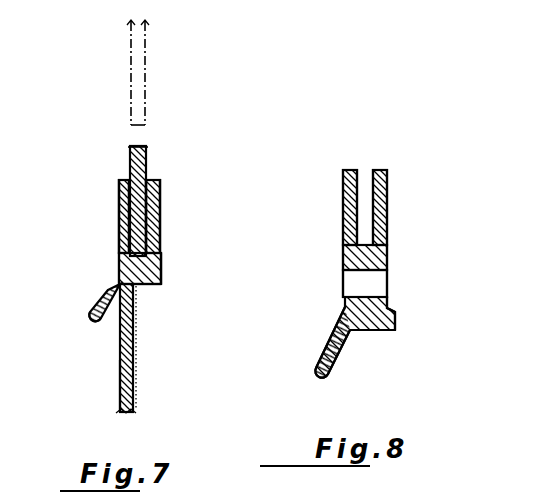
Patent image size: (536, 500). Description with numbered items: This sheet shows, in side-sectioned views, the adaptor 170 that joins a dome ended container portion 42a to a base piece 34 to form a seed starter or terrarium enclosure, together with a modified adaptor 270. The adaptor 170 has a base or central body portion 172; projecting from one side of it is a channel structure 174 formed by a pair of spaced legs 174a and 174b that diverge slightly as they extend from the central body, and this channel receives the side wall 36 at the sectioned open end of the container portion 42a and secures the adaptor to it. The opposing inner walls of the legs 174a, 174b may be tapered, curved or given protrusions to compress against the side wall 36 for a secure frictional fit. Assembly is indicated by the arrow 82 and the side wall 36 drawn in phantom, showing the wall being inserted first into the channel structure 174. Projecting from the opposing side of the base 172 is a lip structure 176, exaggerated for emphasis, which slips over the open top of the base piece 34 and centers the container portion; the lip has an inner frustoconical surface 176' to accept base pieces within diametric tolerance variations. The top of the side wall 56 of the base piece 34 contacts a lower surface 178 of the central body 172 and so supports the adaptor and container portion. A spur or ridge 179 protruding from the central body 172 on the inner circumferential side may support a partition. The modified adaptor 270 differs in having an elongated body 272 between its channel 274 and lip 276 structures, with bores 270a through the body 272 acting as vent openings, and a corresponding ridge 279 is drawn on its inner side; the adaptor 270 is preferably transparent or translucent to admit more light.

In FIG. 7, the side wall 36 is at (147, 58).
In FIG. 7, the arrow 82 is at (132, 95).
In FIG. 7, the container portion 42a is at (122, 151).
In FIG. 7, the leg 174a is at (120, 182).
In FIG. 7, the leg 174b is at (160, 182).
In FIG. 7, the channel structure 174 is at (115, 183).
In FIG. 7, the adaptor 170 is at (166, 230).
In FIG. 7, the spur or ridge 179 is at (161, 264).
In FIG. 7, the central body portion 172 is at (117, 267).
In FIG. 7, the lower surface 178 is at (147, 285).
In FIG. 7, the base piece 34 is at (141, 379).
In FIG. 7, the side wall 56 is at (123, 378).
In FIG. 7, the lip structure 176 is at (70, 304).
In FIG. 7, the inner frustoconical surface 176' is at (74, 338).
In FIG. 8, the channel structure 274 is at (392, 171).
In FIG. 8, the modified adaptor 270 is at (336, 267).
In FIG. 8, the elongated body 272 is at (387, 257).
In FIG. 8, the bores 270a is at (373, 282).
In FIG. 8, the flange 279 is at (394, 310).
In FIG. 8, the lip structure 276 is at (321, 357).